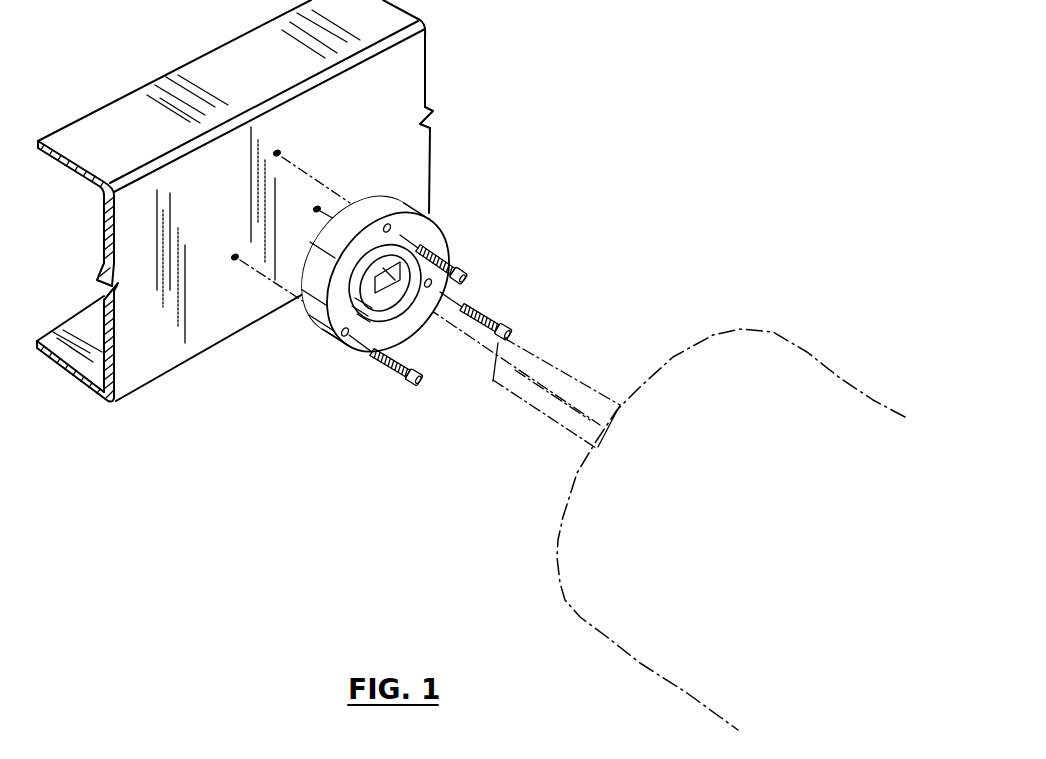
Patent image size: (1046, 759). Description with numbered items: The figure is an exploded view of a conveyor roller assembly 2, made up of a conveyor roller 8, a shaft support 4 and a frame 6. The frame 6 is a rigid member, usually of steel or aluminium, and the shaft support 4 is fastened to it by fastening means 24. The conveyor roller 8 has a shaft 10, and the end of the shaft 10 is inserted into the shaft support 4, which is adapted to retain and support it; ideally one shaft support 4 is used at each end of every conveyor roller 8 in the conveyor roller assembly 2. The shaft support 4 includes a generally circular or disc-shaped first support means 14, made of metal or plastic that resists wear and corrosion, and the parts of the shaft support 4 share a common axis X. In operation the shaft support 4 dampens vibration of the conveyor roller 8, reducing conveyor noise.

The conveyor roller assembly 2 is at (660, 106).
The shaft support 4 is at (430, 214).
The frame 6 is at (426, 50).
The conveyor roller 8 is at (748, 328).
The shaft 10 is at (558, 362).
The first support means 14 is at (448, 258).
The fastening means 24 is at (389, 378).
The common axis X is at (453, 325).